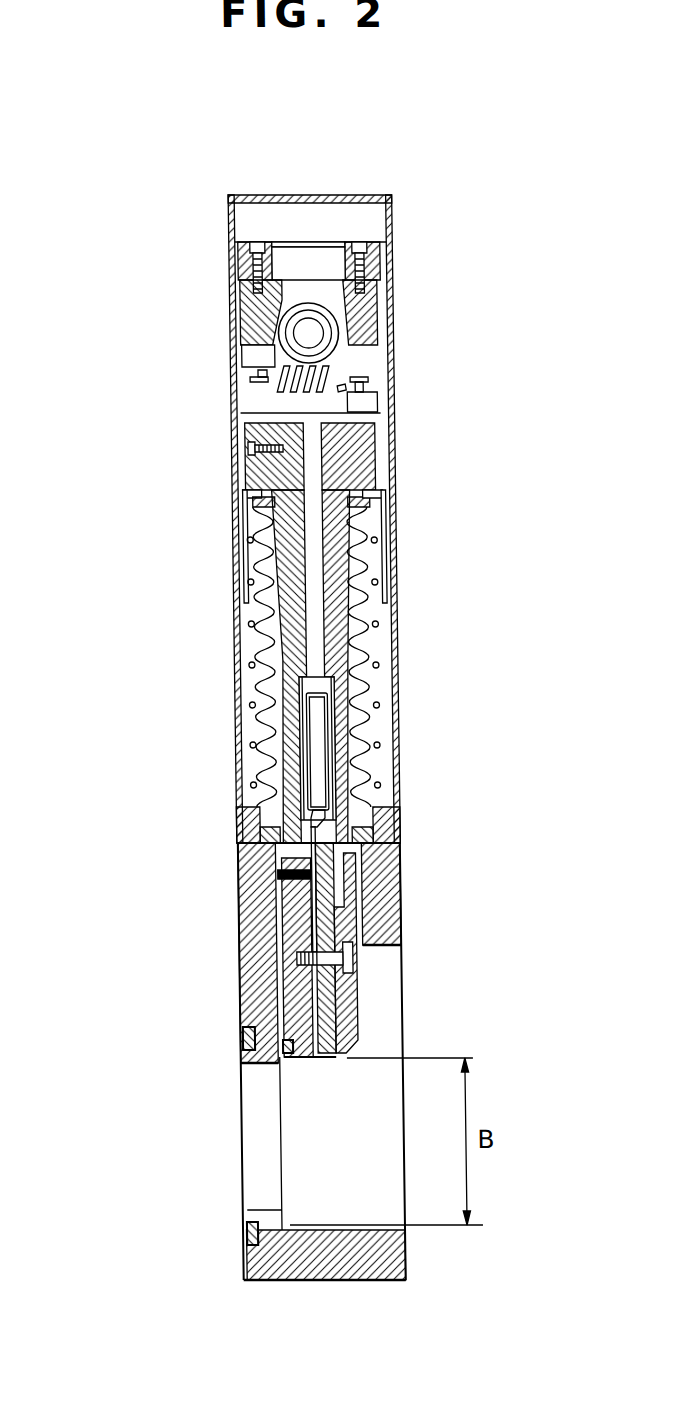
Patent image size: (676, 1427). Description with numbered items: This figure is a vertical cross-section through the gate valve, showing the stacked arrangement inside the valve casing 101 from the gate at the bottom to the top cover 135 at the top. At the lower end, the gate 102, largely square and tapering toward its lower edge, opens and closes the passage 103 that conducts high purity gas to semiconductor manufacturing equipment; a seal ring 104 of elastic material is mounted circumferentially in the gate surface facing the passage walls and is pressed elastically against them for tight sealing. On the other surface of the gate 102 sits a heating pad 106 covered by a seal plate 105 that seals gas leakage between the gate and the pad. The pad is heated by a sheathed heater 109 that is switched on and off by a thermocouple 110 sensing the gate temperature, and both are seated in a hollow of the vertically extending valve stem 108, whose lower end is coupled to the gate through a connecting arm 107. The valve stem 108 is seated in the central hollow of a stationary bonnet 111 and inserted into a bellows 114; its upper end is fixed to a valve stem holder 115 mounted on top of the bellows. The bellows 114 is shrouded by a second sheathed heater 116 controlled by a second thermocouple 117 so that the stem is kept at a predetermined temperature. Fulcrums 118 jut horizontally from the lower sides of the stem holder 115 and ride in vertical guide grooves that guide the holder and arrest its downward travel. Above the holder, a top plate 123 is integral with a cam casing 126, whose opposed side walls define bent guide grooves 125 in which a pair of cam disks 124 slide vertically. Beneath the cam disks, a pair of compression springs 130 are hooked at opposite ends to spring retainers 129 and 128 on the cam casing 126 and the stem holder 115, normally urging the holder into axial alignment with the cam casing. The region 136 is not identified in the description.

The valve casing 101 is at (378, 858).
The gate 102 is at (278, 990).
The passage 103 is at (242, 1152).
The seal ring 104 is at (278, 863).
The seal plate 105 is at (271, 1043).
The heating pad 106 is at (319, 1001).
The connecting arm 107 is at (332, 918).
The valve stem 108 is at (329, 768).
The sheathed heater 109 is at (310, 723).
The thermocouple 110 is at (314, 812).
The bonnet 111 is at (236, 814).
The bellows 114 is at (358, 530).
The valve stem holder 115 is at (354, 447).
The second sheathed heater 116 is at (235, 614).
The second thermocouple 117 is at (235, 579).
The fulcrums 118 is at (372, 622).
The top plate 123 is at (240, 236).
The cam disks 124 is at (335, 318).
The bent guide grooves 125 is at (244, 301).
The cam casing 126 is at (363, 296).
The spring retainer 128 is at (360, 397).
The spring retainer 129 is at (250, 348).
The compression springs 130 is at (258, 395).
The top cover 135 is at (331, 195).
The chamber 136 is at (366, 218).